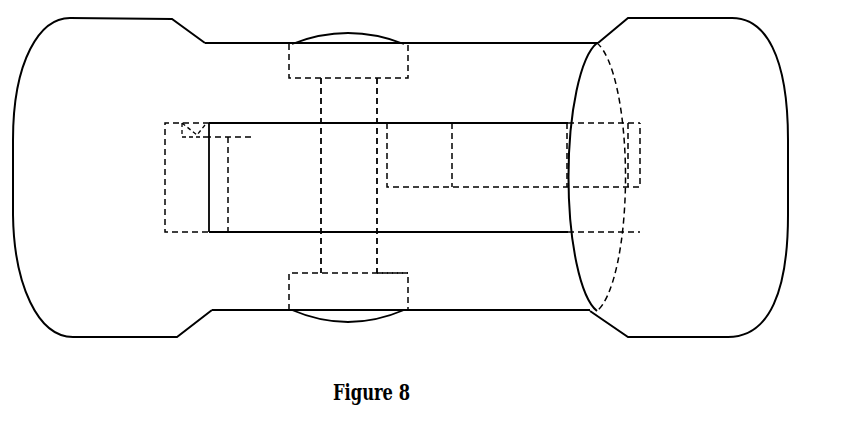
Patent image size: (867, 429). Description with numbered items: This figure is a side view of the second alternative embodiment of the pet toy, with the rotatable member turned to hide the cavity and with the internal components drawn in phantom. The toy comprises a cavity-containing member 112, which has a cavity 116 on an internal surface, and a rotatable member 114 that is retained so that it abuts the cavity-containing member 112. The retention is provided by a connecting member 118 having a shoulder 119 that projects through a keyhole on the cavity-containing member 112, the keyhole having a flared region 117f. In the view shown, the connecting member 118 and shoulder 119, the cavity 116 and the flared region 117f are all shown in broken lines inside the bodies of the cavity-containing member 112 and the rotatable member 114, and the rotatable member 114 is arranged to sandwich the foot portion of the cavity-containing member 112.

The cavity-containing member 112 is at (678, 177).
The rotatable member 114 is at (112, 177).
The cavity 116 is at (513, 155).
The flared region 117f is at (392, 273).
The connecting member 118 is at (402, 175).
The shoulder 119 is at (300, 276).